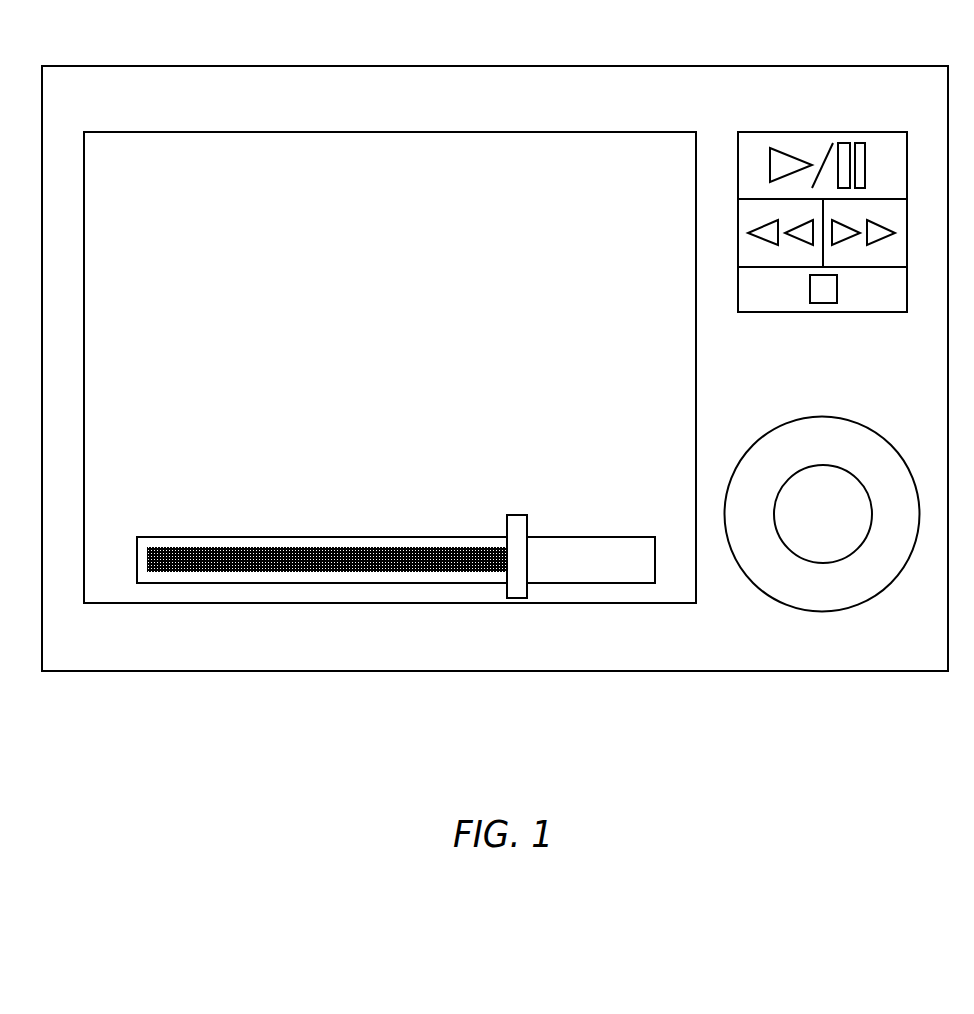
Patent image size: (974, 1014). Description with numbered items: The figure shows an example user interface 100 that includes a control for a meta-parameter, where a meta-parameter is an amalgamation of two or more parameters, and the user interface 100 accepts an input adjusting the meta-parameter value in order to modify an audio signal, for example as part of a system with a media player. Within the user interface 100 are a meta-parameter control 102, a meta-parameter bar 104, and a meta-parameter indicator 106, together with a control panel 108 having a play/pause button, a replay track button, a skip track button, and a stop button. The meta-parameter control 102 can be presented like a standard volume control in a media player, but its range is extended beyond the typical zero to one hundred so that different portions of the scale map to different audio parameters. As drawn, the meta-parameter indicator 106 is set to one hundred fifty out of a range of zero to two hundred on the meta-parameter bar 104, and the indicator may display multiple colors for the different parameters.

The user interface 100 is at (495, 340).
The meta-parameter control 102 is at (819, 452).
The meta-parameter bar 104 is at (241, 527).
The meta-parameter indicator 106 is at (494, 515).
The control panel 108 is at (877, 122).